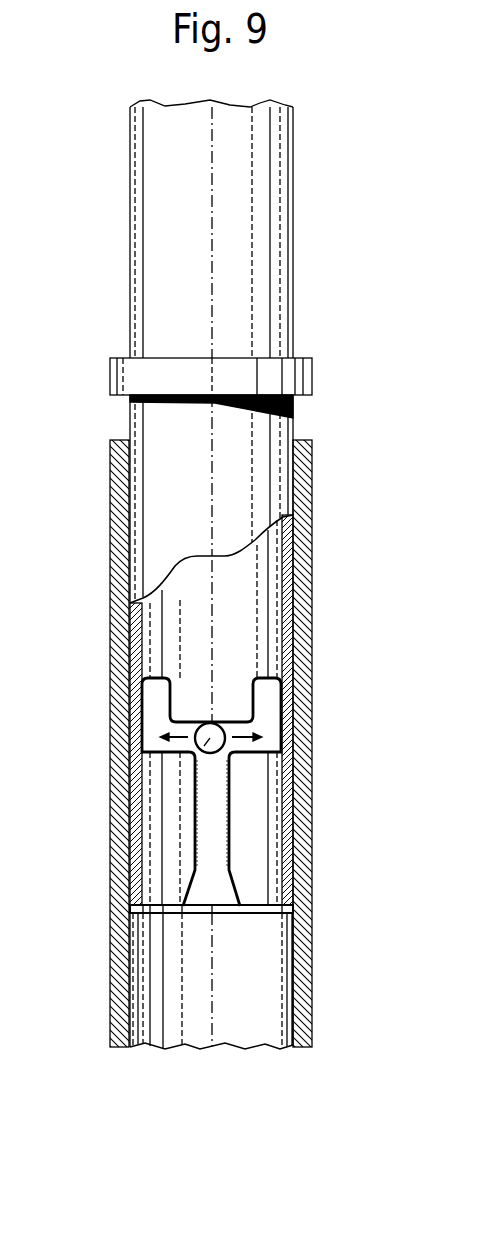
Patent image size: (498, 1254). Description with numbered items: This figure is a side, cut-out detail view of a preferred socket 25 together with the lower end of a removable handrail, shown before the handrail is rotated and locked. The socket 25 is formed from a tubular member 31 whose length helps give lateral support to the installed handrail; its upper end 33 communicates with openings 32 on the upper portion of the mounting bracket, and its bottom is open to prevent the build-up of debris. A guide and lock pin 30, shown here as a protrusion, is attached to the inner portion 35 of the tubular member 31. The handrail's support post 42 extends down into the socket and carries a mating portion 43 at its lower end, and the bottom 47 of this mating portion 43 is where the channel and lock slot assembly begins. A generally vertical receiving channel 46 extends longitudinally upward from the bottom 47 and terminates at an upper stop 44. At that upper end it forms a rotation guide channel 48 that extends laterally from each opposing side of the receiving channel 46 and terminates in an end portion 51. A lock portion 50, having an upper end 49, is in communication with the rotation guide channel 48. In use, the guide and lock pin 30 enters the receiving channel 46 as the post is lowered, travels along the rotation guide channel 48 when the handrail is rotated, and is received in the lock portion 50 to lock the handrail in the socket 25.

The socket 25 is at (98, 623).
The guide and lock pin 30 is at (193, 757).
The tubular member 31 is at (312, 748).
The openings 32 is at (293, 437).
The upper end 33 is at (313, 478).
The inner portion 35 is at (133, 993).
The support post 42 is at (290, 135).
The mating portion 43 is at (255, 663).
The upper stop 44 is at (198, 720).
The receiving channel 46 is at (230, 832).
The bottom 47 is at (263, 913).
The rotation guide channel 48 is at (153, 740).
The upper end 49 is at (158, 676).
The lock portion 50 is at (157, 690).
The end portion 51 is at (148, 720).